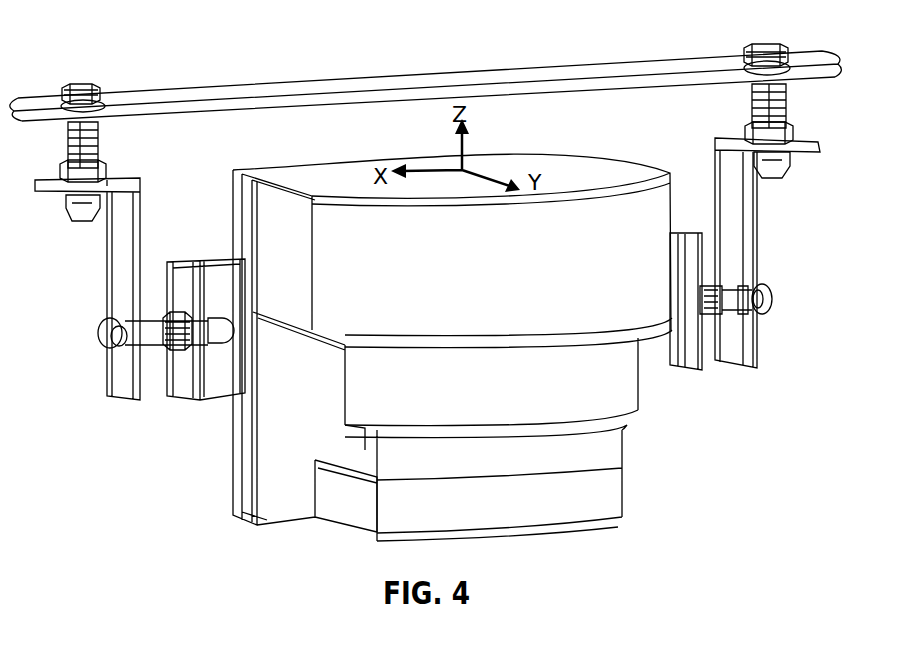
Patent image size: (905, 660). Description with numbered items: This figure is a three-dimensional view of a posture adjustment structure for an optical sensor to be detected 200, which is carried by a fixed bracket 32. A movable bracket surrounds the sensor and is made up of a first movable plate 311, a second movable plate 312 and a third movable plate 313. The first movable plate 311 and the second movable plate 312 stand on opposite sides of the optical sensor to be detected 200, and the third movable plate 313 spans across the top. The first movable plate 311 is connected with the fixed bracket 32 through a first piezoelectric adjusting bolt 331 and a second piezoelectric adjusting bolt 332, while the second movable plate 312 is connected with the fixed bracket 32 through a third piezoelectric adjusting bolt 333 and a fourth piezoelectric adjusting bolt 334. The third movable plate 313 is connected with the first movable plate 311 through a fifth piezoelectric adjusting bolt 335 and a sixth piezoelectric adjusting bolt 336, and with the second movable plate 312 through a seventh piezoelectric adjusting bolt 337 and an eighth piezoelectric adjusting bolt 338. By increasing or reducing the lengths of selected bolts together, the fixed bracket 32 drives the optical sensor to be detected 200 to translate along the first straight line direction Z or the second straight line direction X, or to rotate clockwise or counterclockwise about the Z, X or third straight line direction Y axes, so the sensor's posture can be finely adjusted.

The third movable plate 313 is at (428, 82).
The eighth piezoelectric adjusting bolt 338 is at (66, 97).
The seventh piezoelectric adjusting bolt 337 is at (92, 100).
The sixth piezoelectric adjusting bolt 336 is at (752, 52).
The fifth piezoelectric adjusting bolt 335 is at (770, 58).
The first movable plate 311 is at (745, 220).
The second piezoelectric adjusting bolt 332 is at (716, 287).
The first piezoelectric adjusting bolt 331 is at (758, 298).
The second movable plate 312 is at (122, 292).
The fourth piezoelectric adjusting bolt 334 is at (105, 333).
The third piezoelectric adjusting bolt 333 is at (118, 342).
The fixed bracket 32 is at (262, 465).
The optical sensor to be detected 200 is at (617, 297).